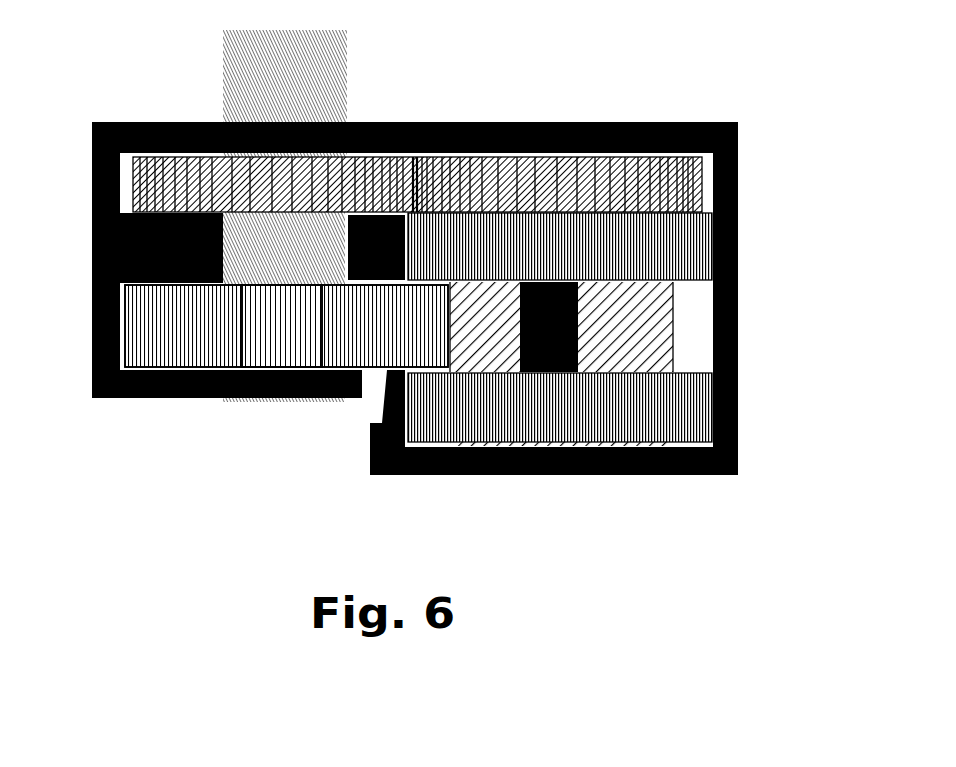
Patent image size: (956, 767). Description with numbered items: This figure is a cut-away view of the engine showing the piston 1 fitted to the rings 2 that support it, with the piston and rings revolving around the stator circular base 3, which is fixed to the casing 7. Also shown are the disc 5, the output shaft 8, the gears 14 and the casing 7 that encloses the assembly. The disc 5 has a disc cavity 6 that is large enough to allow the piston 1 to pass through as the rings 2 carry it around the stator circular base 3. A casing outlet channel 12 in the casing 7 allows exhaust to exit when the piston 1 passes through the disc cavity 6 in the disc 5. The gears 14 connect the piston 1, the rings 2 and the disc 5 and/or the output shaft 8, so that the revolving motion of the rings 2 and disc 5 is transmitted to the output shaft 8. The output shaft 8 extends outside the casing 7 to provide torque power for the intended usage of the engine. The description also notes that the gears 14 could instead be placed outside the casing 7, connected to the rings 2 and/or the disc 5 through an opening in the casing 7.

The piston 1 is at (545, 330).
The rings supporting piston 2 is at (626, 327).
The stator circular base 3 is at (561, 411).
The disc 5 is at (182, 322).
The disc cavity 6 is at (280, 338).
The casing 7 is at (105, 182).
The output shaft 8 is at (243, 92).
The casing outlet channel 12 is at (372, 403).
The gears 14 is at (417, 148).